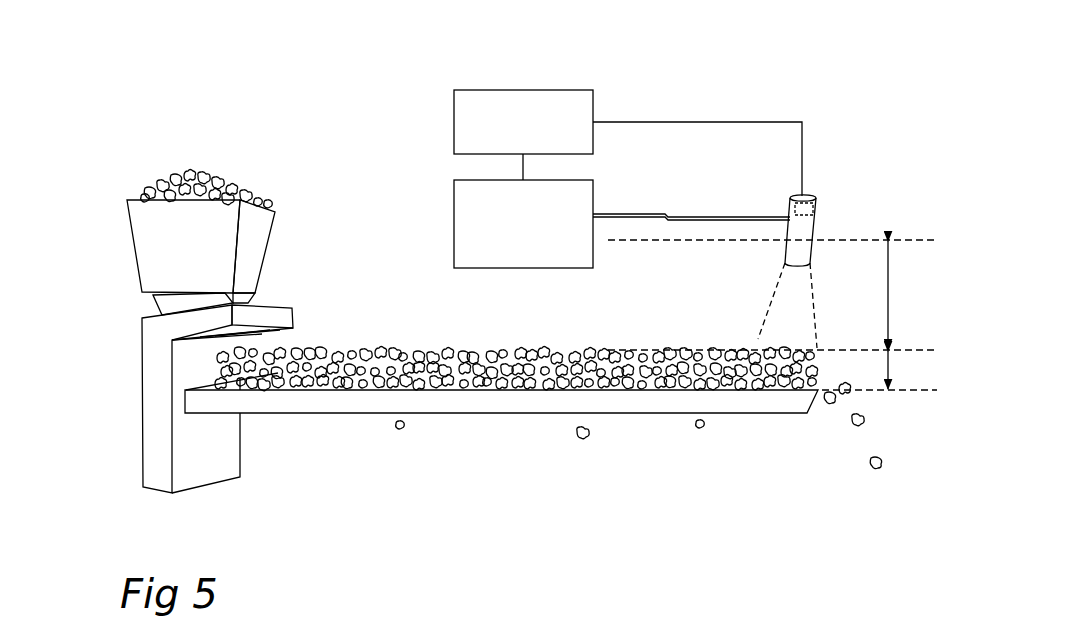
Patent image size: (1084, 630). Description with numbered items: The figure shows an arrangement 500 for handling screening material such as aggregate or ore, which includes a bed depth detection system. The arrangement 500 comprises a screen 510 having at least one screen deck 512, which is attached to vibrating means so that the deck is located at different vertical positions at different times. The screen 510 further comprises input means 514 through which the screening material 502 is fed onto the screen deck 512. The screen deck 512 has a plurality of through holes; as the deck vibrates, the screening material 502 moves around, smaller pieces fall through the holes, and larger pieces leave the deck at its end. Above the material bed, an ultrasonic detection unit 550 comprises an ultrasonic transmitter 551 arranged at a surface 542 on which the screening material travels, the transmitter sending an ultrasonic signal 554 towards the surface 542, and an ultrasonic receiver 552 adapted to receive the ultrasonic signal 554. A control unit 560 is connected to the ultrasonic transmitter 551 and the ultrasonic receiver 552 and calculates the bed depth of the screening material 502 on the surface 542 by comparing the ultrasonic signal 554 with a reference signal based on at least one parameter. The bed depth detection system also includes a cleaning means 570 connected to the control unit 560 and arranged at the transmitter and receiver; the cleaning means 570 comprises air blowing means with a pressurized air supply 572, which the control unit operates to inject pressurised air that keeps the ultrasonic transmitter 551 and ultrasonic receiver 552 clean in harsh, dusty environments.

The arrangement 500 is at (303, 82).
The screening material 502 is at (178, 155).
The screen 510 is at (133, 368).
The screen deck 512 is at (495, 418).
The input means 514 is at (258, 245).
The surface 542 is at (777, 347).
The ultrasonic detection unit 550 is at (868, 182).
The ultrasonic transmitter 551 is at (815, 207).
The ultrasonic receiver 552 is at (815, 214).
The ultrasonic signal 554 is at (790, 303).
The control unit 560 is at (628, 143).
The cleaning means 570 is at (711, 199).
The pressurized air supply 572 is at (523, 224).